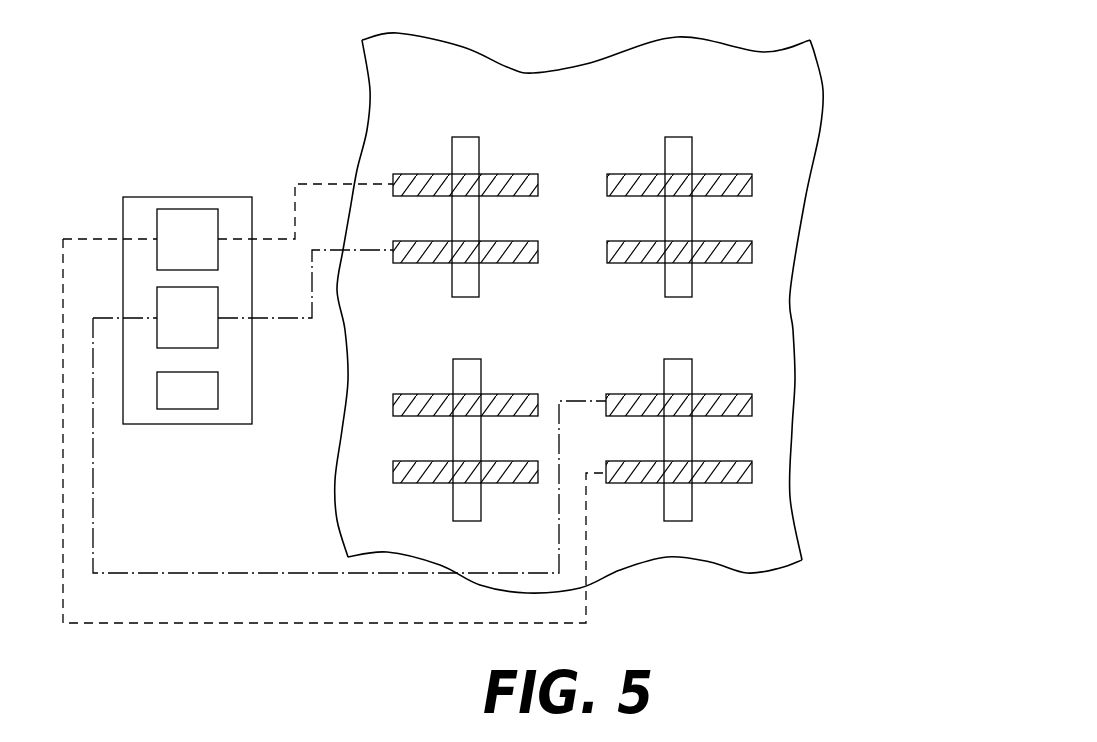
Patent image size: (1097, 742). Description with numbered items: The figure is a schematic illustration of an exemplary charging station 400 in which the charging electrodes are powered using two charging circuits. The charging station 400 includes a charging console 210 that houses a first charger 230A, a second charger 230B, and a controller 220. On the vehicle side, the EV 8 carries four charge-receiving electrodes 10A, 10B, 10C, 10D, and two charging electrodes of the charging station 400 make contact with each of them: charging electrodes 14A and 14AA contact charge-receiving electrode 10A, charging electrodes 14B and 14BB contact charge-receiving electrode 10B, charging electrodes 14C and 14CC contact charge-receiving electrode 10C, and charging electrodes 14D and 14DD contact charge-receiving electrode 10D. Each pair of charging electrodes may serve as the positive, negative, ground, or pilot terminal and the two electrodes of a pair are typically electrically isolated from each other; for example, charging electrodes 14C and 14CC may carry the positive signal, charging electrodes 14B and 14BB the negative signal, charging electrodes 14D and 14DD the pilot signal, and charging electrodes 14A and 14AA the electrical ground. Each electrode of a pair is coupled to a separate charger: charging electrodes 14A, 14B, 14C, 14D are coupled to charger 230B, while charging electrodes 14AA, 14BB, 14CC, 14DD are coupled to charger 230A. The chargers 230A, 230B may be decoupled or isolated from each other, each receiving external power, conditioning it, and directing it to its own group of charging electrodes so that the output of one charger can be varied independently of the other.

The charging station 400 is at (649, 313).
The EV 8 is at (790, 293).
The charge-receiving electrode 10A is at (476, 369).
The charge-receiving electrode 10B is at (666, 371).
The charge-receiving electrode 10C is at (464, 137).
The charge-receiving electrode 10D is at (679, 137).
The charging electrode 14A is at (410, 394).
The charging electrode 14AA is at (410, 484).
The charging electrode 14B is at (720, 394).
The charging electrode 14BB is at (731, 484).
The charging electrode 14C is at (410, 263).
The charging electrode 14CC is at (407, 174).
The charging electrode 14D is at (745, 263).
The charging electrode 14DD is at (733, 174).
The charging console 210 is at (180, 260).
The controller 220 is at (205, 403).
The first charger 230A is at (211, 254).
The second charger 230B is at (211, 333).